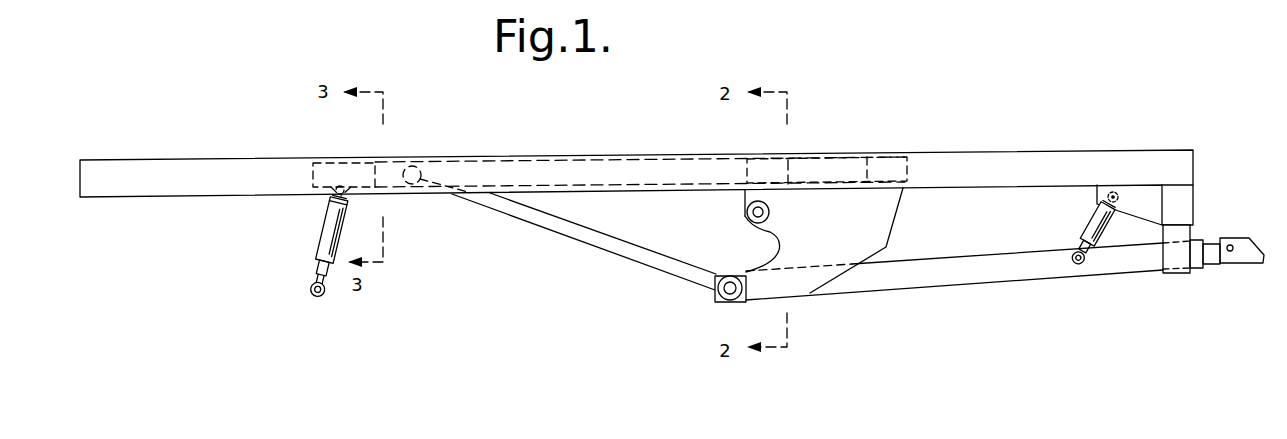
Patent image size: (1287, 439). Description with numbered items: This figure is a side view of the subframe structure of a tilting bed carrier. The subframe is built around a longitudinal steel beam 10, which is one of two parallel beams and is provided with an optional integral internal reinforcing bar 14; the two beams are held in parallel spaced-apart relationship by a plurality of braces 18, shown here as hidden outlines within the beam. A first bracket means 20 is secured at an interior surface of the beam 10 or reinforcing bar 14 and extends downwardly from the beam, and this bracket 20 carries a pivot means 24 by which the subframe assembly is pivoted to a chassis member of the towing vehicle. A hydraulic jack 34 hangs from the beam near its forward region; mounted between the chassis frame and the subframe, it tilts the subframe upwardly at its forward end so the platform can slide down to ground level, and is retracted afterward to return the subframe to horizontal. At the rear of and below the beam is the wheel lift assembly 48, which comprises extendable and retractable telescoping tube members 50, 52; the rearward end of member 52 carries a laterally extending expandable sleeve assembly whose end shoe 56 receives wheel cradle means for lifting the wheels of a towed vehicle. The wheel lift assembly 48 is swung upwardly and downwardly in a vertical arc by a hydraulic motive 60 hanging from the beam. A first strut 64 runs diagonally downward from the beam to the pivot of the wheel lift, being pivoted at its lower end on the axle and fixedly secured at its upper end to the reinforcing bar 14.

The longitudinal steel beam 10 is at (987, 152).
The reinforcing bar 14 is at (604, 158).
The brace 18 is at (340, 162).
The first bracket means 20 is at (892, 223).
The pivot means 24 is at (747, 213).
The hydraulic jack 34 is at (327, 227).
The wheel lift assembly 48 is at (1003, 287).
The telescoping tube member 50 is at (1138, 272).
The telescoping tube member 52 is at (1214, 244).
The end shoe 56 is at (1238, 264).
The hydraulic motive 60 is at (1087, 224).
The first strut 64 is at (612, 249).